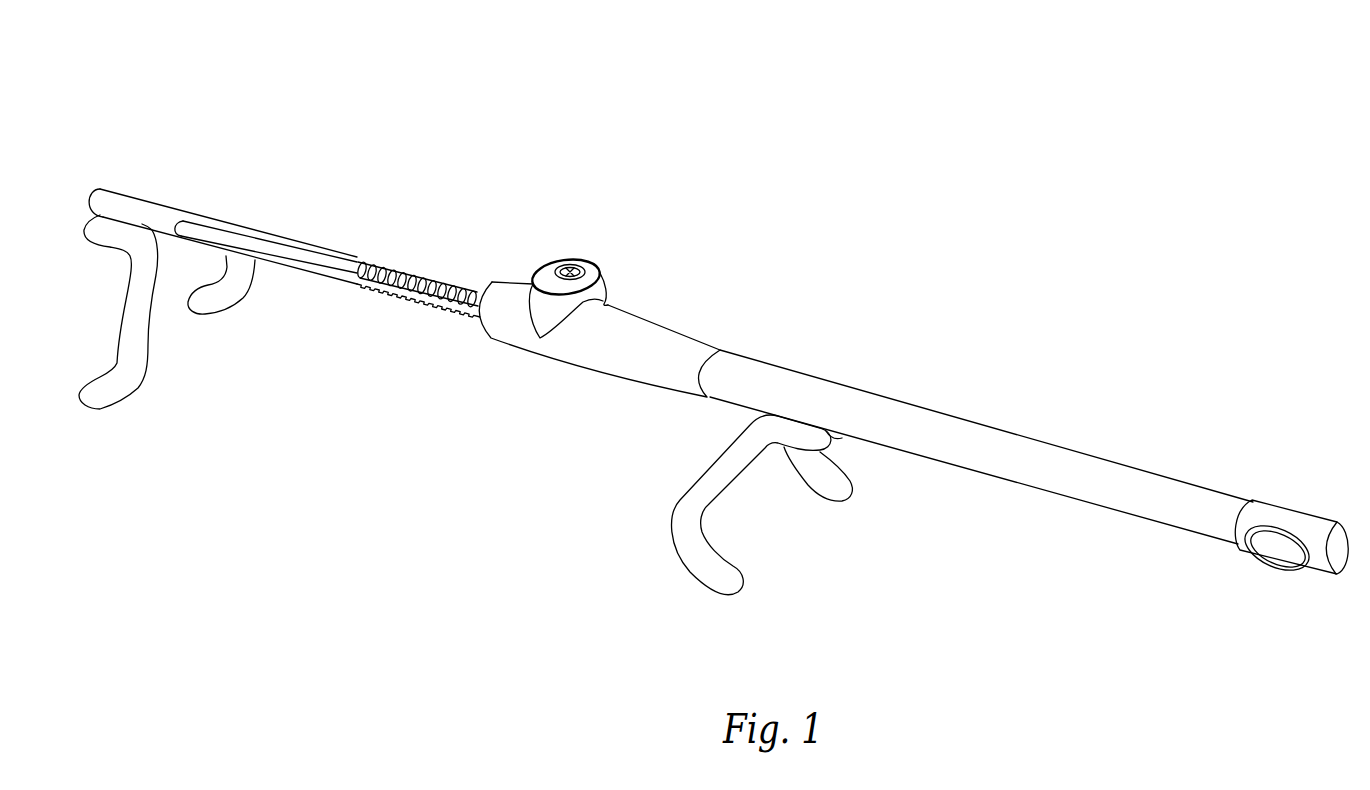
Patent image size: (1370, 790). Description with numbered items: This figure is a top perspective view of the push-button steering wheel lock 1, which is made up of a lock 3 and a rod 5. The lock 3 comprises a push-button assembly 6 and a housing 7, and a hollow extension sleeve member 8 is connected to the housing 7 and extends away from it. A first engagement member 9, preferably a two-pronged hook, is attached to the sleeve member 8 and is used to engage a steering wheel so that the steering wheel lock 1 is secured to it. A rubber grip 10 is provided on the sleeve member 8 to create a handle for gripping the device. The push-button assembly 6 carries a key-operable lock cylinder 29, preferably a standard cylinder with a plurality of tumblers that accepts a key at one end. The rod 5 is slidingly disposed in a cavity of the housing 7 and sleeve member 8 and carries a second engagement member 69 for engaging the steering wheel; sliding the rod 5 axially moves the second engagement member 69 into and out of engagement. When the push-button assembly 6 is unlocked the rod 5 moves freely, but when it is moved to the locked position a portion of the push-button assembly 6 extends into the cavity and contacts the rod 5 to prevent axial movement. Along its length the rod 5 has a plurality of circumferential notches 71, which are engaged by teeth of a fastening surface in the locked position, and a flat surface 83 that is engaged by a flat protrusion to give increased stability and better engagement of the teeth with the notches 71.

The push-button steering wheel lock 1 is at (501, 157).
The lock 3 is at (598, 307).
The rod 5 is at (316, 249).
The push-button assembly 6 is at (542, 254).
The housing 7 is at (585, 362).
The hollow extension sleeve member 8 is at (986, 443).
The first engagement member 9 is at (678, 523).
The rubber grip 10 is at (1291, 505).
The key-operable lock cylinder 29 is at (571, 260).
The second engagement member 69 is at (130, 380).
The circumferential notches 71 is at (382, 275).
The flat surface 83 is at (412, 297).